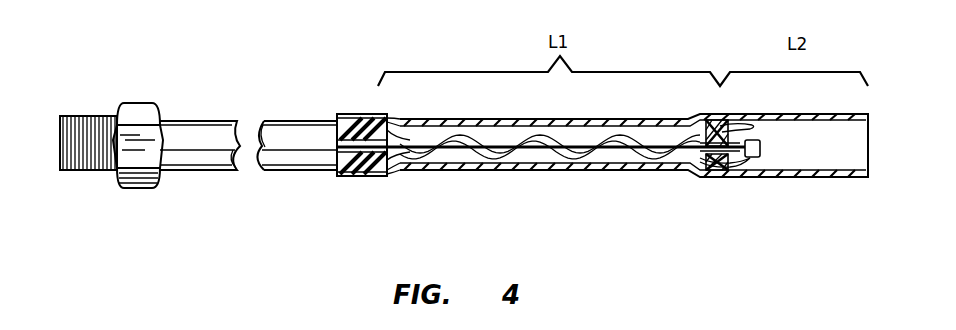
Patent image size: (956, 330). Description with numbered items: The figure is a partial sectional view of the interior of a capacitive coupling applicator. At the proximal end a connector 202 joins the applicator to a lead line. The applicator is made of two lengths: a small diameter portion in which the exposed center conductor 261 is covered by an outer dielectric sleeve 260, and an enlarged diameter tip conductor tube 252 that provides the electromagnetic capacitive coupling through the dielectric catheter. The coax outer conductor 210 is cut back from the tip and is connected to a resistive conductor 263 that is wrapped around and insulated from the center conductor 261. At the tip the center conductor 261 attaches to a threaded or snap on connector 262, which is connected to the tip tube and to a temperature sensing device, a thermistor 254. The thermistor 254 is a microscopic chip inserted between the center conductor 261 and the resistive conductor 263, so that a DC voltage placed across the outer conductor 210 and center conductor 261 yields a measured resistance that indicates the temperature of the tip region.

The connector 202 is at (106, 118).
The coax outer conductor 210 is at (352, 116).
The outer dielectric sleeve 260 is at (463, 172).
The center conductor 261 is at (556, 151).
The resistive conductor 263 is at (580, 165).
The threaded or snap on connector 262 is at (752, 125).
The thermistor 254 is at (763, 148).
The enlarged diameter tip conductor tube 252 is at (736, 176).